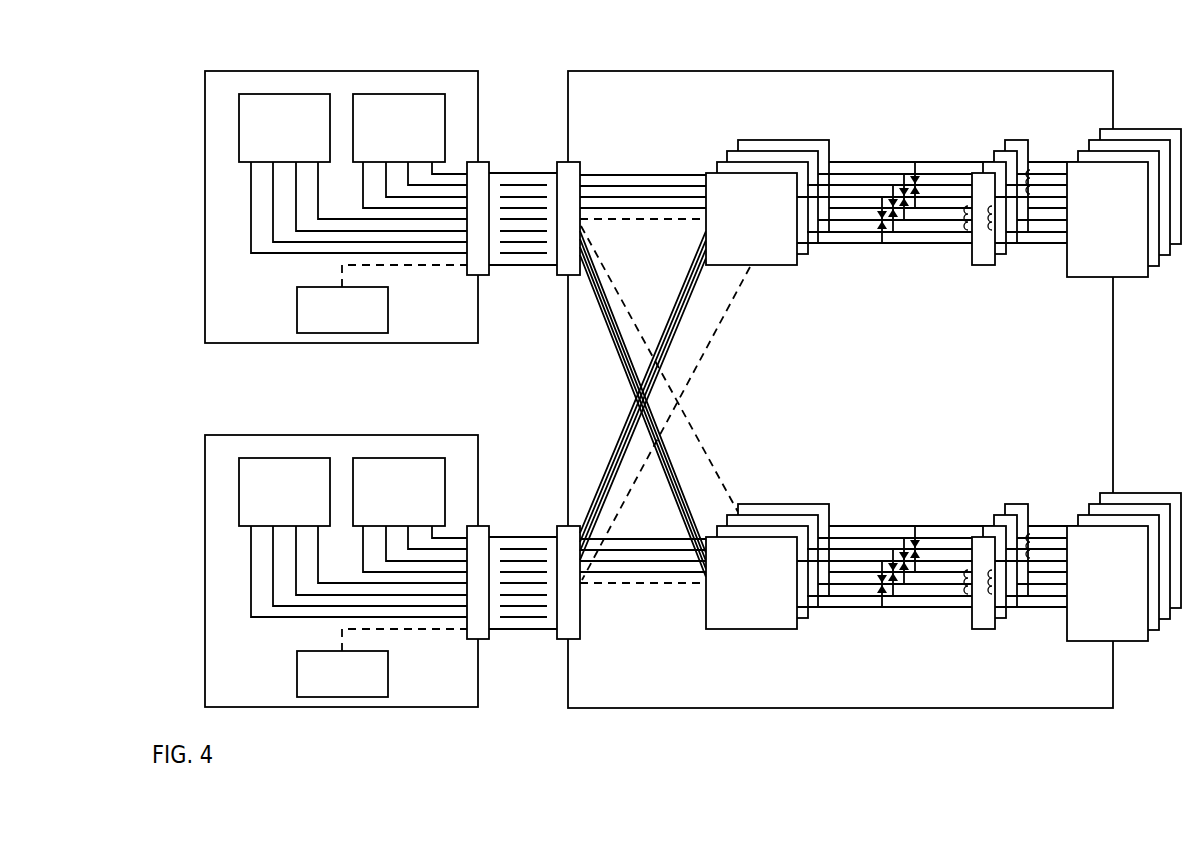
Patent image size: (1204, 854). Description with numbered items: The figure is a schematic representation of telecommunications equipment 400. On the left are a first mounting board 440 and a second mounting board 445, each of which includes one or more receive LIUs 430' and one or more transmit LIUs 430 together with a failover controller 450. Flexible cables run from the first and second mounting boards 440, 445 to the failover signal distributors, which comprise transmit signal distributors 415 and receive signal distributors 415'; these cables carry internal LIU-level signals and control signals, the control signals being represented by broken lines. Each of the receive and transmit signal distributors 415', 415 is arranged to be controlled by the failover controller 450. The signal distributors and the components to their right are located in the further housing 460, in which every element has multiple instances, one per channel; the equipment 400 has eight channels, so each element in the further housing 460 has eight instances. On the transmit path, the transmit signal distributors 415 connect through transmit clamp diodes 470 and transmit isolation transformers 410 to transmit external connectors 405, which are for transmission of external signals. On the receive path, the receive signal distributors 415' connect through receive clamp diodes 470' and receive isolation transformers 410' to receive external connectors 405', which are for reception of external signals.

The telecommunications equipment 400 is at (978, 50).
The transmit external connectors 405 is at (1124, 203).
The receive external connectors 405' is at (1124, 567).
The transmit isolation transformers 410 is at (1032, 258).
The receive isolation transformers 410' is at (1032, 510).
The transmit signal distributors 415 is at (855, 202).
The receive signal distributors 415' is at (855, 566).
The transmit LIUs 430 is at (399, 310).
The receive LIUs 430' is at (284, 310).
The first mounting board 440 is at (262, 337).
The second mounting board 445 is at (262, 701).
The failover controller 450 is at (362, 325).
The further housing 460 is at (1100, 700).
The transmit clamp diodes 470 is at (932, 263).
The receive clamp diodes 470' is at (933, 503).